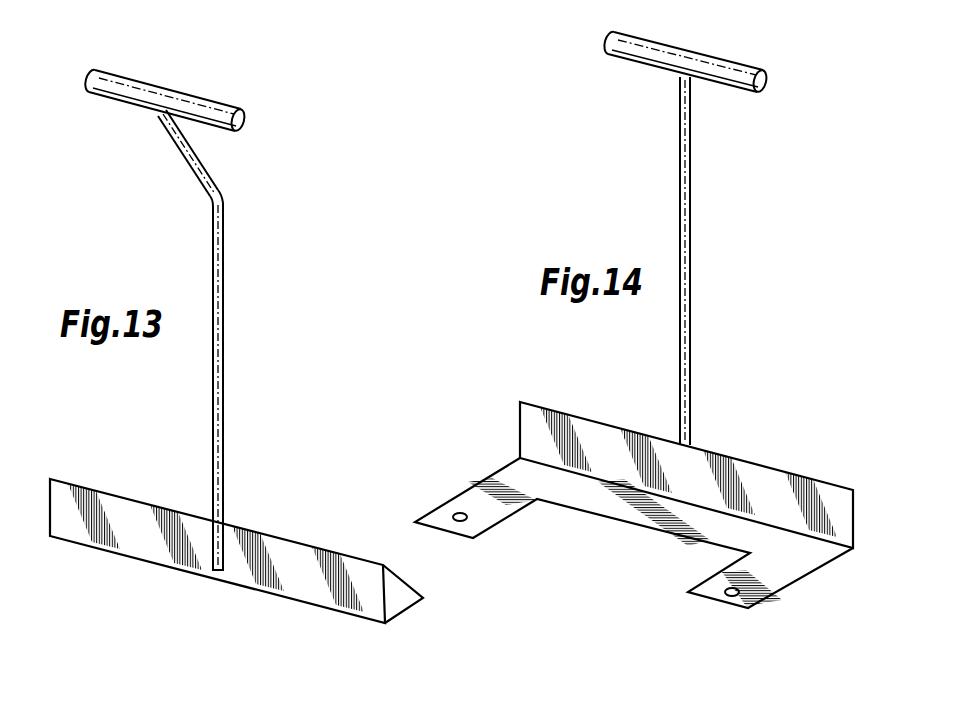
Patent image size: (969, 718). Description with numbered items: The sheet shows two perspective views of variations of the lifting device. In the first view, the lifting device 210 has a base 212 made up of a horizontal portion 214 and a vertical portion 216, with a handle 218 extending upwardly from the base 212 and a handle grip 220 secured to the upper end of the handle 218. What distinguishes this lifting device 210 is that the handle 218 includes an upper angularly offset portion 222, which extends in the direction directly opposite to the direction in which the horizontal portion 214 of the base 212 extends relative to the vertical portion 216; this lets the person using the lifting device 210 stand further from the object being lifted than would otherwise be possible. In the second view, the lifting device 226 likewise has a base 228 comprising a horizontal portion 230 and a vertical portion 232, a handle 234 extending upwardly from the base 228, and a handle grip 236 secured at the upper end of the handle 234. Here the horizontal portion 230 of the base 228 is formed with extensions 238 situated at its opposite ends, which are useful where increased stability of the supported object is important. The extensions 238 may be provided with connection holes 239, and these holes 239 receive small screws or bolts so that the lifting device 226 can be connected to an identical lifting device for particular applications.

In FIG. 13, the lifting device 210 is at (197, 258).
In FIG. 13, the base 212 is at (128, 494).
In FIG. 13, the horizontal portion 214 is at (395, 605).
In FIG. 13, the vertical portion 216 is at (332, 563).
In FIG. 13, the handle 218 is at (223, 425).
In FIG. 13, the handle grip 220 is at (220, 128).
In FIG. 13, the angularly offset portion 222 is at (188, 163).
In FIG. 14, the lifting device 226 is at (679, 190).
In FIG. 14, the base 228 is at (593, 427).
In FIG. 14, the horizontal portion 230 is at (537, 478).
In FIG. 14, the vertical portion 232 is at (818, 512).
In FIG. 14, the handle 234 is at (691, 368).
In FIG. 14, the handle grip 236 is at (628, 65).
In FIG. 14, the extensions 238 is at (480, 490).
In FIG. 14, the connection holes 239 is at (460, 512).